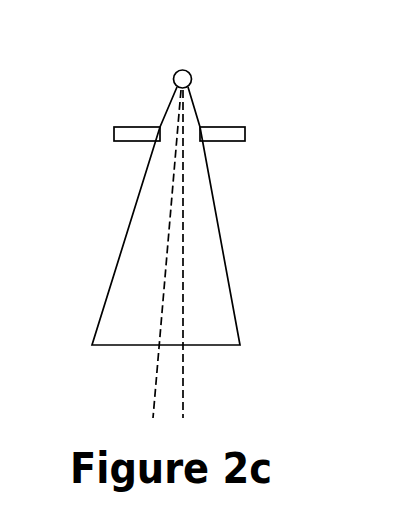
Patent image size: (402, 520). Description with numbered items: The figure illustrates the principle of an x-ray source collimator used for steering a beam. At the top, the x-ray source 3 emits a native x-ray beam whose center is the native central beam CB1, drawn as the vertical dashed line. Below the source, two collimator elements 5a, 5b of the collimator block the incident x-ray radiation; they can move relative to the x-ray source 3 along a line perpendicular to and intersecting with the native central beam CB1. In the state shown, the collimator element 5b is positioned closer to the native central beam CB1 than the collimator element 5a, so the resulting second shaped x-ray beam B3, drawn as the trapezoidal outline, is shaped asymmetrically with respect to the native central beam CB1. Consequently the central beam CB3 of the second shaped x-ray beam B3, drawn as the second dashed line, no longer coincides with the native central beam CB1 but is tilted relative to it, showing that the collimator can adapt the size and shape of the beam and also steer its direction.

The x-ray source 3 is at (175, 72).
The collimator element 5a is at (140, 127).
The collimator element 5b is at (218, 127).
The second shaped x-ray beam B3 is at (218, 218).
The central beam of the second shaped x-ray beam CB3 is at (157, 367).
The native central beam CB1 is at (185, 367).